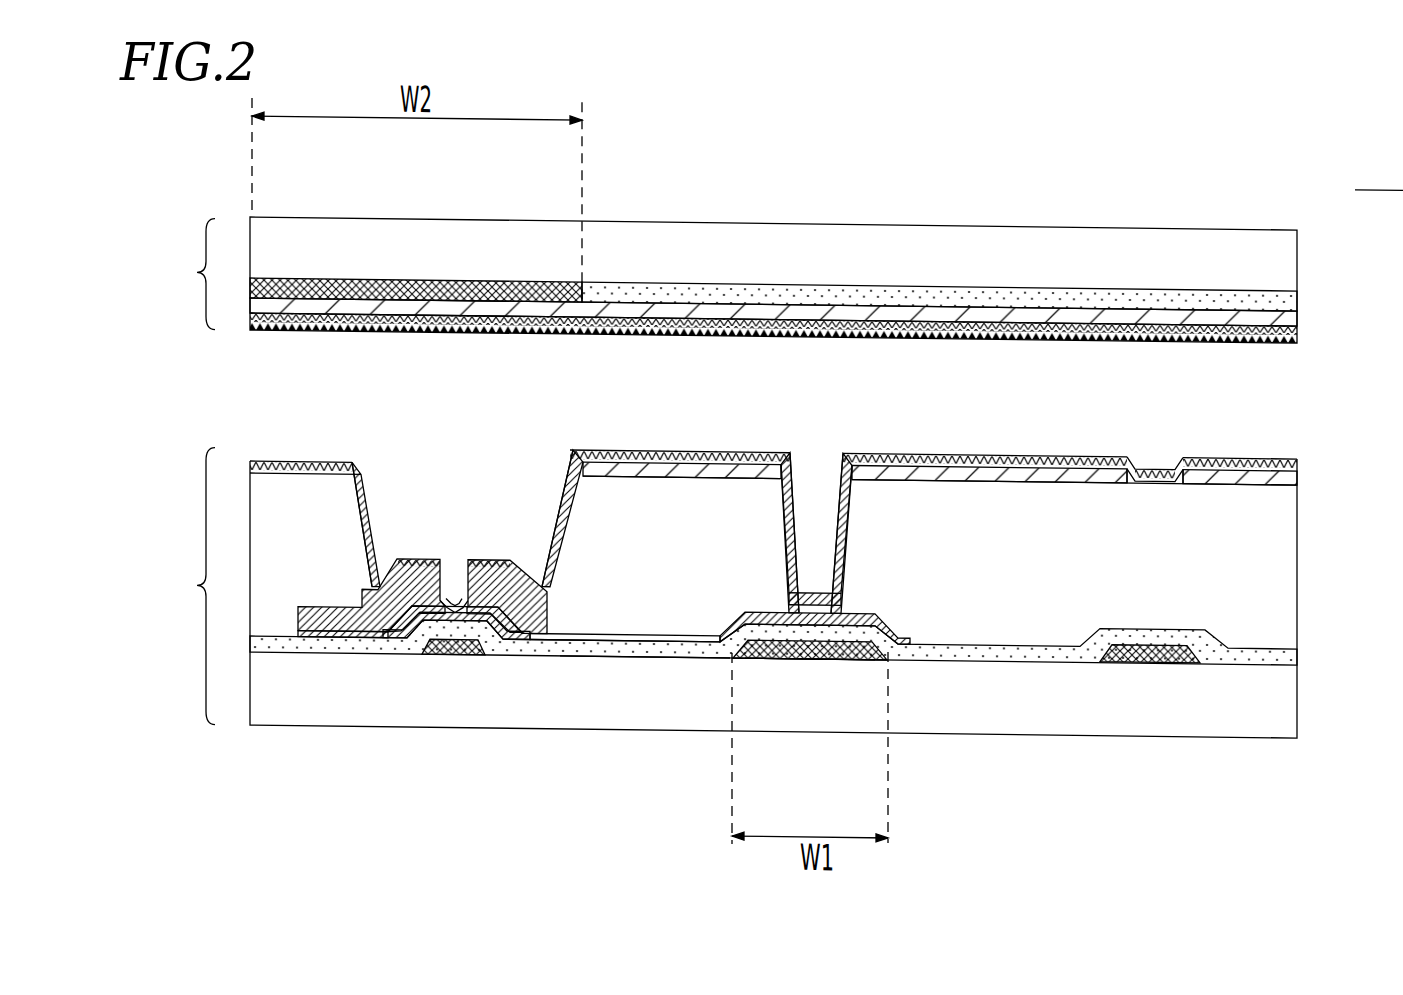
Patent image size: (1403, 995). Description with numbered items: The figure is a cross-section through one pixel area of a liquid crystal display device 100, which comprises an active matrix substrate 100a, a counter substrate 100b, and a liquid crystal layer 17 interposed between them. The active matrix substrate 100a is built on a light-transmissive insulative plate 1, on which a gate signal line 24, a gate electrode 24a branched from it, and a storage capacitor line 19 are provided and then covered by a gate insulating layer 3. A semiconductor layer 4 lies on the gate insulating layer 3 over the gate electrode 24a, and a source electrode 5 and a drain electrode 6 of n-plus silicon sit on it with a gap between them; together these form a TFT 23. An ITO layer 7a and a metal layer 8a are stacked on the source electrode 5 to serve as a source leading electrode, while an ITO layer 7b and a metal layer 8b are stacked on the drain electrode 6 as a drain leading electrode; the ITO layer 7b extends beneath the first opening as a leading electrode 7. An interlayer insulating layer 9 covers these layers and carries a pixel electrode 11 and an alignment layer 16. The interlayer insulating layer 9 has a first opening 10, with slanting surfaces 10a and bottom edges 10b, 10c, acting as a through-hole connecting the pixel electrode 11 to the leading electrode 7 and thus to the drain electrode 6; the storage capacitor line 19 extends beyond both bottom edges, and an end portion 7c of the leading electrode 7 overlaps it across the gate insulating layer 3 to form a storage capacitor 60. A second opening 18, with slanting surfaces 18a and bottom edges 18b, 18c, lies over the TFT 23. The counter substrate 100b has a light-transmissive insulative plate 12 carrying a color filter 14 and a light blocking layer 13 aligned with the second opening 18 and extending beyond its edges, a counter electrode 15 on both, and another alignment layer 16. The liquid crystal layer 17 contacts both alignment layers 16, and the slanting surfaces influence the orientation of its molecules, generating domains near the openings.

The insulative plate 1 is at (1053, 705).
The gate insulating layer 3 is at (703, 652).
The semiconductor layer 4 is at (416, 632).
The source electrode 5 is at (395, 632).
The drain electrode 6 is at (500, 628).
The leading electrode 7 is at (642, 645).
The ITO layer 7a is at (330, 632).
The ITO layer 7b is at (530, 628).
The end portion 7c is at (826, 653).
The metal layer 8a is at (300, 625).
The metal layer 8b is at (562, 636).
The interlayer insulating layer 9 is at (1275, 559).
The first opening 10 is at (835, 428).
The surfaces 10a is at (830, 495).
The bottom edge 10b is at (793, 526).
The bottom edge 10c is at (847, 536).
The pixel electrode 11 is at (1000, 469).
The insulative plate 12 is at (630, 245).
The light blocking layer 13 is at (412, 276).
The color filter 14 is at (762, 286).
The counter electrode 15 is at (960, 304).
The alignment layer 16 is at (1297, 317).
The liquid crystal layer 17 is at (272, 418).
The second opening 18 is at (568, 434).
The surfaces 18a is at (383, 572).
The bottom edge 18b is at (379, 569).
The bottom edge 18c is at (535, 570).
The storage capacitor line 19 is at (776, 655).
The TFT 23 is at (455, 532).
The gate signal line 24 is at (1142, 654).
The gate electrode 24a is at (456, 648).
The storage capacitor 60 is at (801, 671).
The liquid crystal display device 100 is at (1379, 173).
The active matrix substrate 100a is at (173, 586).
The counter substrate 100b is at (173, 274).